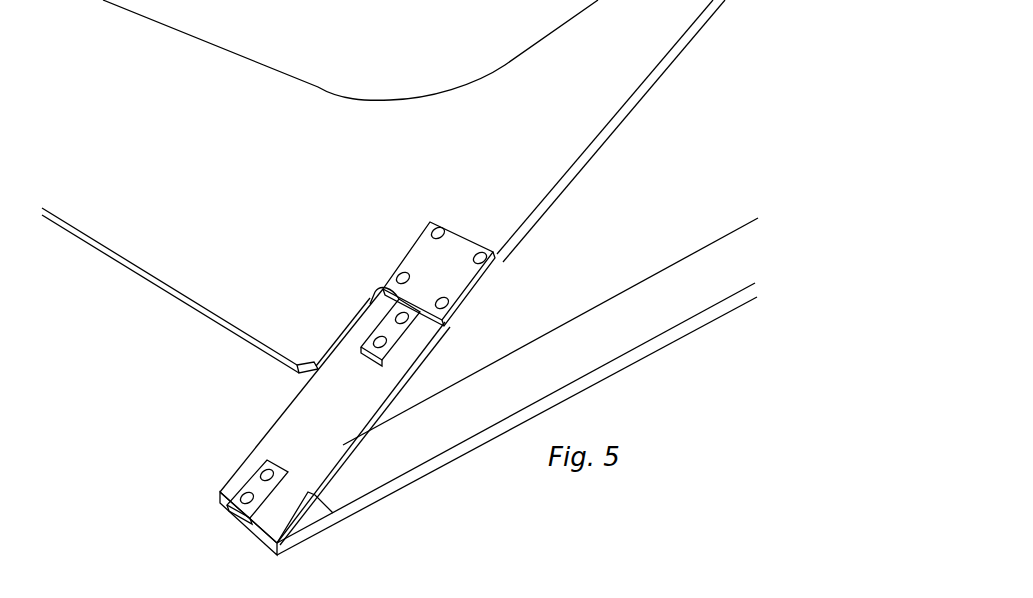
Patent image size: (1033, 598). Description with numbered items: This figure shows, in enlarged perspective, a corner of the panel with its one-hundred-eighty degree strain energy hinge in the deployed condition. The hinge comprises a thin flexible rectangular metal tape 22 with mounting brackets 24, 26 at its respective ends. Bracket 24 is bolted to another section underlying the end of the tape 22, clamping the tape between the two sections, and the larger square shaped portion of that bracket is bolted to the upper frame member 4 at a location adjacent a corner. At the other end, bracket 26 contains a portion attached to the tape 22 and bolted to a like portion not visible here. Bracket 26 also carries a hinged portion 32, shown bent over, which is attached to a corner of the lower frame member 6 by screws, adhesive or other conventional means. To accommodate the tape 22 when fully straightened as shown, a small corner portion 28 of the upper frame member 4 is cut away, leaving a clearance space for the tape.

The upper frame member 4 is at (601, 174).
The lower frame member 6 is at (614, 297).
The tape 22 is at (267, 423).
The mounting bracket 24 is at (407, 248).
The mounting bracket 26 is at (217, 514).
The corner portion 28 is at (344, 325).
The hinged portion 32 is at (312, 522).